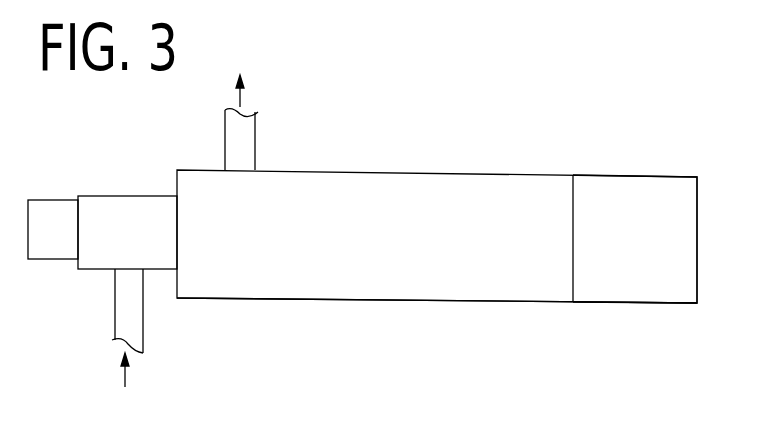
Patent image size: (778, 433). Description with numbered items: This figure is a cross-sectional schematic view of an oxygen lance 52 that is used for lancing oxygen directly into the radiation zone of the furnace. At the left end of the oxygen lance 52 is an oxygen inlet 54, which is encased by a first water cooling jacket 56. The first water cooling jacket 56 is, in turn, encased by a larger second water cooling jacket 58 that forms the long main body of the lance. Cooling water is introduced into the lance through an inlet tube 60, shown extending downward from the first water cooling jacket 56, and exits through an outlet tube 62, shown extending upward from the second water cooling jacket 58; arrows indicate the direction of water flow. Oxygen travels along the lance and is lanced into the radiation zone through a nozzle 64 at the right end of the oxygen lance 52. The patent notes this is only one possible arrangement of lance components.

The oxygen lance 52 is at (443, 150).
The oxygen inlet 54 is at (52, 210).
The first water cooling jacket 56 is at (123, 199).
The second water cooling jacket 58 is at (428, 301).
The inlet tube 60 is at (120, 310).
The outlet tube 62 is at (250, 152).
The nozzle 64 is at (608, 176).